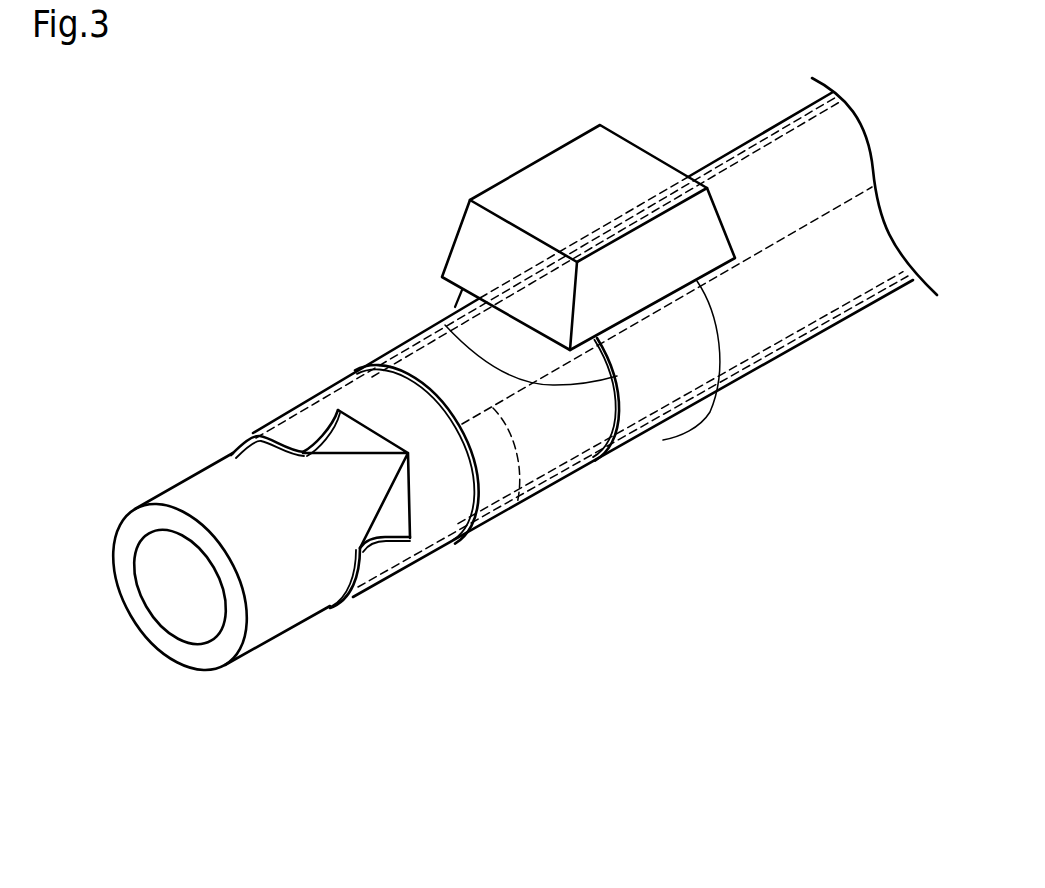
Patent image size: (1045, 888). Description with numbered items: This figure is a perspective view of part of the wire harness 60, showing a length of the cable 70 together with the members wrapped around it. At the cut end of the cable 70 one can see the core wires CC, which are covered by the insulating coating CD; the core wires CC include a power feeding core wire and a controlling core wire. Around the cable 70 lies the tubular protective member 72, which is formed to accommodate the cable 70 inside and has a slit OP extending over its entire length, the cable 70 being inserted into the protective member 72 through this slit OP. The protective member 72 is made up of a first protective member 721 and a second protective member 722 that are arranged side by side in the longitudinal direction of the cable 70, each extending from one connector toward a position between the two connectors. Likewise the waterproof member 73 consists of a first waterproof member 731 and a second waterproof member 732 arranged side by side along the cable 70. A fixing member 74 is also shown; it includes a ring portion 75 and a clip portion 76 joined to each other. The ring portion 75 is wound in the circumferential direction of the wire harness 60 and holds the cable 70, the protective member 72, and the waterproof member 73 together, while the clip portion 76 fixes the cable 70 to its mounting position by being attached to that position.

The wire harness 60 is at (165, 237).
The cable 70 is at (232, 720).
The insulating coating CD is at (170, 658).
The core wires CC is at (200, 645).
The protective member 72 is at (365, 596).
The first protective member 721 is at (335, 542).
The second protective member 722 is at (363, 541).
The waterproof member 73 is at (492, 536).
The first waterproof member 731 is at (486, 474).
The second waterproof member 732 is at (492, 473).
The fixing member 74 is at (350, 242).
The ring portion 75 is at (445, 325).
The clip portion 76 is at (456, 233).
The slit OP is at (522, 498).